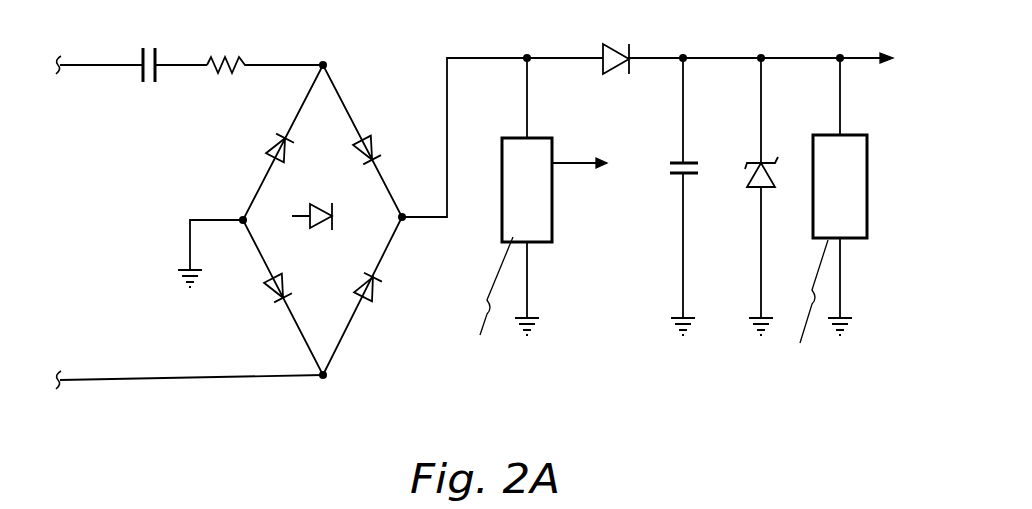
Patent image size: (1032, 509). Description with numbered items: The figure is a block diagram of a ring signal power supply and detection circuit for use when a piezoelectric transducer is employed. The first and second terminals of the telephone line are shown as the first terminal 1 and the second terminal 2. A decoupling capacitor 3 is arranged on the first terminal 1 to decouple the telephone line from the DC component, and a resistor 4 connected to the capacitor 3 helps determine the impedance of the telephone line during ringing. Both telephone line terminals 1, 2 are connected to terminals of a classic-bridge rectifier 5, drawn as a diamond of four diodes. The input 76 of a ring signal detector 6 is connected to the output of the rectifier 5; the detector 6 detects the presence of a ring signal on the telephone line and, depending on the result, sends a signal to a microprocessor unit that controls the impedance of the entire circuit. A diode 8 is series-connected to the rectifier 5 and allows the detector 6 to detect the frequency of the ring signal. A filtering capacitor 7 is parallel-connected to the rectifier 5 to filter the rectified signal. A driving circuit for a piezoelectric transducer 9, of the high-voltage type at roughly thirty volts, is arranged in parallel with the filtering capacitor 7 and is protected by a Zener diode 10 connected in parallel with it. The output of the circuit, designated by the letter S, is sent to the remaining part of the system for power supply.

The first terminal of the telephone line 1 is at (82, 63).
The second terminal of the telephone line 2 is at (120, 382).
The decoupling capacitor 3 is at (157, 53).
The resistor 4 is at (233, 56).
The classic-bridge rectifier 5 is at (360, 104).
The ring signal detector 6 is at (552, 216).
The filtering capacitor 7 is at (672, 180).
The diode 8 is at (612, 43).
The driving circuit for a piezoelectric transducer 9 is at (843, 186).
The Zener diode 10 is at (756, 190).
The input of the ring signal detector 76 is at (533, 110).